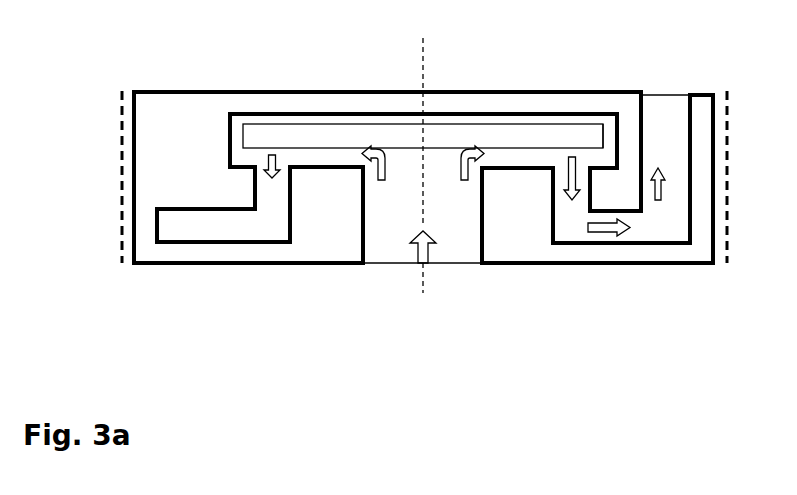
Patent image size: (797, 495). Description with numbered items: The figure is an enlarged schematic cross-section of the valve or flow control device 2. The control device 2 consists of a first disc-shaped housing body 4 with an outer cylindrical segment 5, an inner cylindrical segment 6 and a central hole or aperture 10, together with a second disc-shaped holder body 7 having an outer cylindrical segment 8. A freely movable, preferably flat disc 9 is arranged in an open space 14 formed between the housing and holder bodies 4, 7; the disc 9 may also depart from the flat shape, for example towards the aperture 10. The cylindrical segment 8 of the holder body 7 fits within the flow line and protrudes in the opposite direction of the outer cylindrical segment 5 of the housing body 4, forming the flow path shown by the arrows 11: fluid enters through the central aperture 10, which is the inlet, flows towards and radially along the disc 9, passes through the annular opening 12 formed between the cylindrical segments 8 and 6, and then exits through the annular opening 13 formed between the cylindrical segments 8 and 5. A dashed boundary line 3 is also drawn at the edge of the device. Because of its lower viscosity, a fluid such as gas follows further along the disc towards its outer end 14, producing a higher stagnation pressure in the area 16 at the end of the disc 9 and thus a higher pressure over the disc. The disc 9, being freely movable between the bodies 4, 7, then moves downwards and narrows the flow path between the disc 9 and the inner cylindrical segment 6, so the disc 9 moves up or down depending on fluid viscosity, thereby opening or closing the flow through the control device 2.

The control device 2 is at (213, 285).
The housing boundary 3 is at (727, 102).
The first disc-shaped housing body 4 is at (660, 250).
The outer cylindrical segment 5 is at (698, 160).
The inner cylindrical segment 6 is at (500, 218).
The second disc-shaped holder body 7 is at (297, 108).
The outer cylindrical segment 8 is at (602, 150).
The disc 9 is at (407, 140).
The central hole or aperture 10 is at (390, 202).
The arrows 11 is at (422, 265).
The annular opening 12 is at (568, 205).
The annular opening 13 is at (630, 140).
The open space 14 is at (228, 120).
The area 16 is at (603, 153).